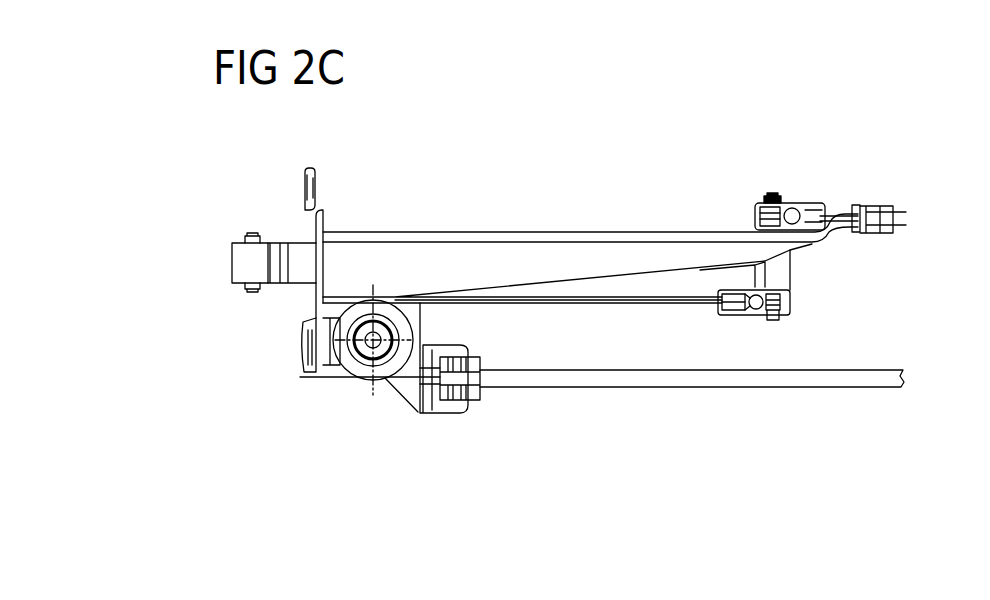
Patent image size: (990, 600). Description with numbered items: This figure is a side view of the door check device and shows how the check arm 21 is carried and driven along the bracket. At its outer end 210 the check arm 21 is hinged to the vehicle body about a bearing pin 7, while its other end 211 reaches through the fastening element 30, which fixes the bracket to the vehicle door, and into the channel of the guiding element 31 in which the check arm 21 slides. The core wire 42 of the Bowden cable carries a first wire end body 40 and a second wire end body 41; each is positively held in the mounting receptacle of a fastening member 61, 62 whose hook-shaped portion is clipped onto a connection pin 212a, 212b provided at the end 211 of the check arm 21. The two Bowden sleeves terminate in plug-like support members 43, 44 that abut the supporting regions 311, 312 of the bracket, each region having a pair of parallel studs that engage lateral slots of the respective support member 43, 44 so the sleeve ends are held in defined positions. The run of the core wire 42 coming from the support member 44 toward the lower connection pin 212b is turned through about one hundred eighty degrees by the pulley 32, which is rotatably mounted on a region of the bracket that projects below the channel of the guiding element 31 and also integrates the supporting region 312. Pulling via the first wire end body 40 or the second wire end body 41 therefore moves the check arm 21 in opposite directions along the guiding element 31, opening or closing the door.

The bearing pin 7 is at (247, 230).
The check arm 21 is at (297, 241).
The fastening element 30 is at (313, 176).
The guiding element 31 is at (455, 233).
The pulley 32 is at (352, 372).
The first wire end body 40 is at (797, 212).
The second wire end body 41 is at (748, 309).
The core wire 42 is at (570, 306).
The support member 43 is at (890, 210).
The support member 44 is at (470, 402).
The fastening member 61 is at (756, 205).
The fastening member 62 is at (719, 306).
The end of the check arm 210 is at (243, 265).
The end of the check arm 211 is at (783, 275).
The connection pin 212a is at (770, 194).
The connection pin 212b is at (773, 320).
The supporting region 311 is at (857, 208).
The supporting region 312 is at (432, 402).